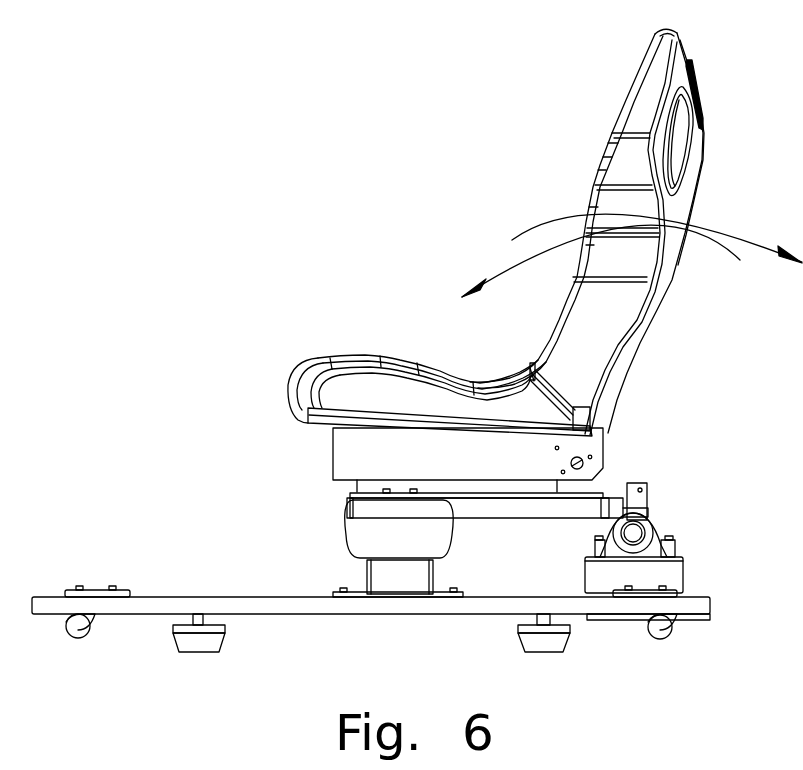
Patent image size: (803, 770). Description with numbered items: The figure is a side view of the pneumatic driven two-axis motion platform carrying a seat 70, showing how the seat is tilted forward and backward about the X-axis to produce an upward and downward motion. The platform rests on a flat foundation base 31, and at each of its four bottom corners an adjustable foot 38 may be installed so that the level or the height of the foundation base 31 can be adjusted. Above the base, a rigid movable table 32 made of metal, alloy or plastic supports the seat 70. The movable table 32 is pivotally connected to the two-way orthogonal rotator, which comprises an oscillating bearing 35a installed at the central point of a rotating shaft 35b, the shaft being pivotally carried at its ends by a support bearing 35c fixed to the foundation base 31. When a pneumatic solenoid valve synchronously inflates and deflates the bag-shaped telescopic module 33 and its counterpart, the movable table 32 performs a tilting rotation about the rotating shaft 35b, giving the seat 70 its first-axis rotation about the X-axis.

The seat 70 is at (684, 33).
The foundation base 31 is at (168, 596).
The movable table 32 is at (350, 493).
The bag-shaped telescopic module 33 is at (356, 528).
The oscillating bearing 35a is at (635, 483).
The rotating shaft 35b is at (635, 547).
The support bearing 35c is at (653, 527).
The adjustable foot 38 is at (225, 637).